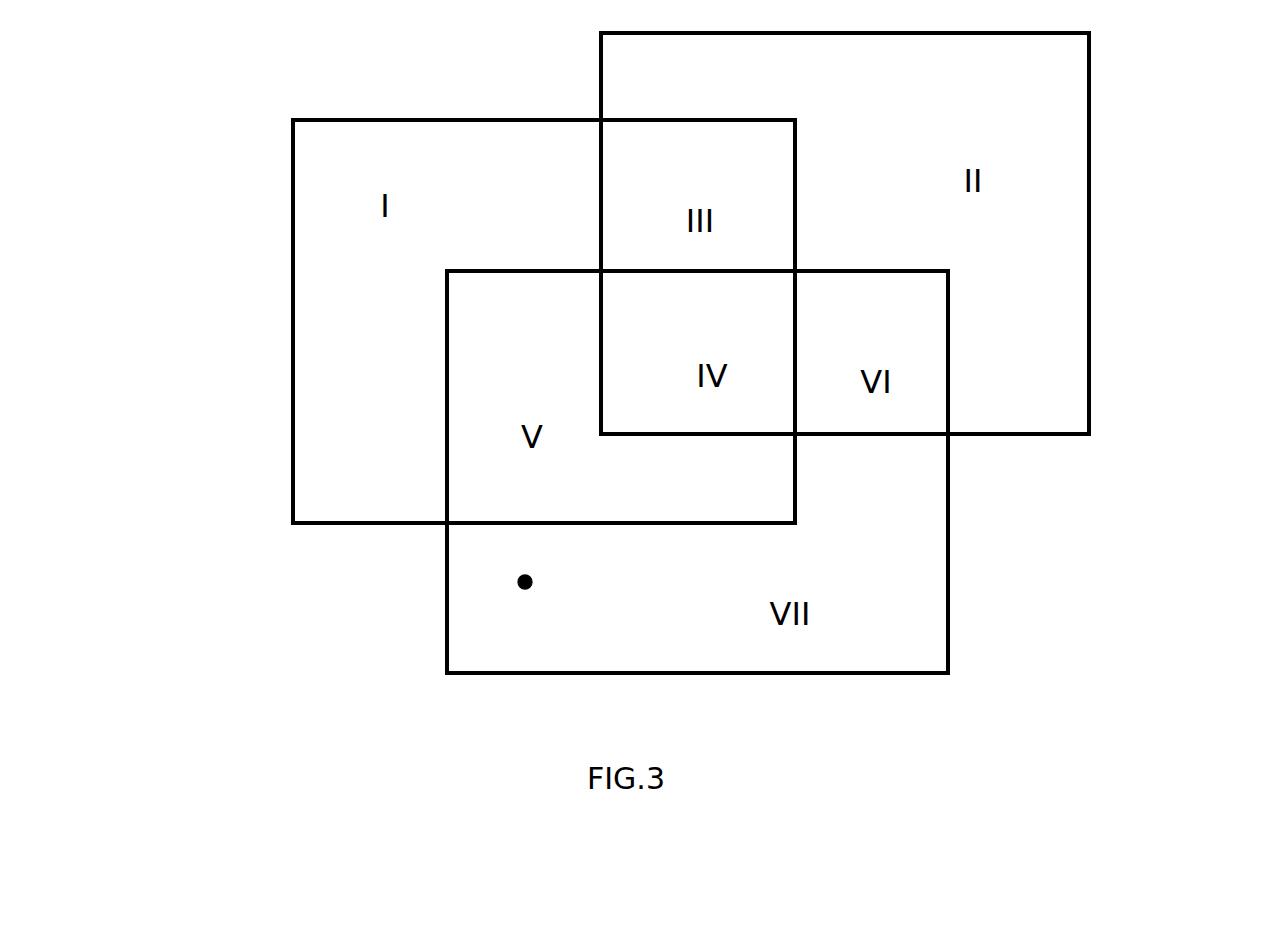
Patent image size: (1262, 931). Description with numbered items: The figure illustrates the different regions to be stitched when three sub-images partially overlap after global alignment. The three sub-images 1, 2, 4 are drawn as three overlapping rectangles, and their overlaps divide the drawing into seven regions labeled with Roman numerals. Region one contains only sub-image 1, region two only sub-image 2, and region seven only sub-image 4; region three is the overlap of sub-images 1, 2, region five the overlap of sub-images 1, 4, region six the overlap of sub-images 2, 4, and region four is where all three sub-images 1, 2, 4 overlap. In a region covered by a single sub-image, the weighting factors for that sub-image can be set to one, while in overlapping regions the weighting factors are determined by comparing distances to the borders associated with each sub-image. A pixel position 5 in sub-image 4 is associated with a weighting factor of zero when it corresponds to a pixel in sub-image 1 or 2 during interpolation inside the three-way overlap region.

The sub-image 1 is at (293, 296).
The sub-image 2 is at (1090, 196).
The sub-image 4 is at (950, 543).
The pixel position 5 is at (520, 586).